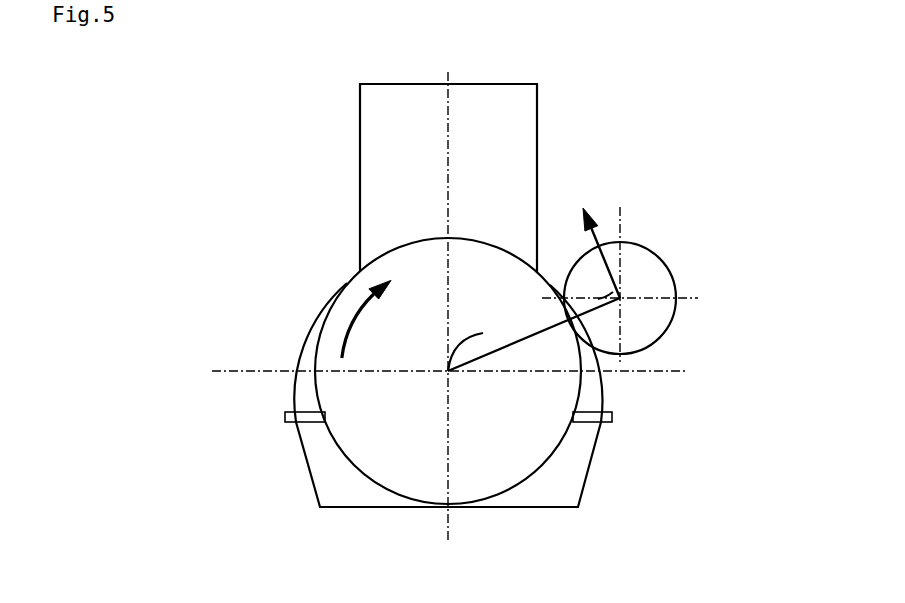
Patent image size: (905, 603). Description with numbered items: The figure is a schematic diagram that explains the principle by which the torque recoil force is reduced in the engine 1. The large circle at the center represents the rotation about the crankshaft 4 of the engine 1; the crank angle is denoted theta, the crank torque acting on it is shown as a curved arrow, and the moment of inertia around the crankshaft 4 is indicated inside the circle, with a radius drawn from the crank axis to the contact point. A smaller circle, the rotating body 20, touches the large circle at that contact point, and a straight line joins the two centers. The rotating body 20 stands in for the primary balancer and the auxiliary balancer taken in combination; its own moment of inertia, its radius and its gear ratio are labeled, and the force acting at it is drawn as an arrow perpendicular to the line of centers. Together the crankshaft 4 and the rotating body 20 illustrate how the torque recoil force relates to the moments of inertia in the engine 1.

The engine 1 is at (268, 152).
The crankshaft 4 is at (358, 278).
The rotating body 20 is at (655, 268).